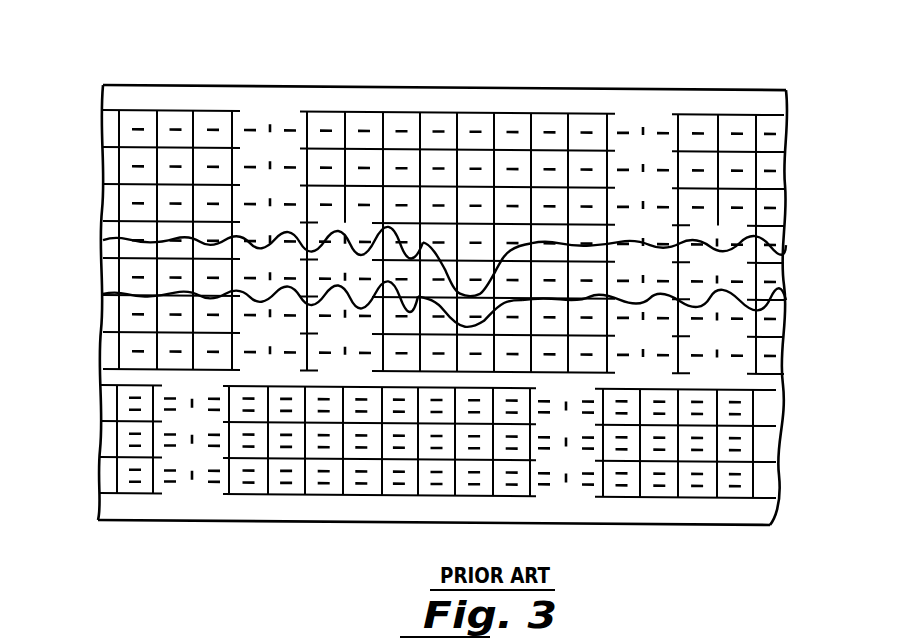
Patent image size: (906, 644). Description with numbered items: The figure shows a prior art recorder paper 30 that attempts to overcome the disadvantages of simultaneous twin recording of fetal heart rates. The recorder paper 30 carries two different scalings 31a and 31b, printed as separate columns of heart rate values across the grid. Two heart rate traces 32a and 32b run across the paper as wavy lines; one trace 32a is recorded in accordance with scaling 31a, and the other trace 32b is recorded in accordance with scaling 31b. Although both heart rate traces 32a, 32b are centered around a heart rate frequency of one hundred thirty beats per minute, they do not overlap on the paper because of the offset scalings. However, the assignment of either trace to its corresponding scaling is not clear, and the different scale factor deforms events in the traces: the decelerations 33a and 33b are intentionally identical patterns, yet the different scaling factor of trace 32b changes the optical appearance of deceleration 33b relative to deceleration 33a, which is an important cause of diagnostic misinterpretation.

The recorder paper 30 is at (718, 98).
The first scaling 31a is at (270, 78).
The second scaling 31b is at (345, 78).
The first heart rate trace 32a is at (102, 240).
The second heart rate trace 32b is at (108, 292).
The first deceleration 33a is at (444, 254).
The second deceleration 33b is at (476, 326).